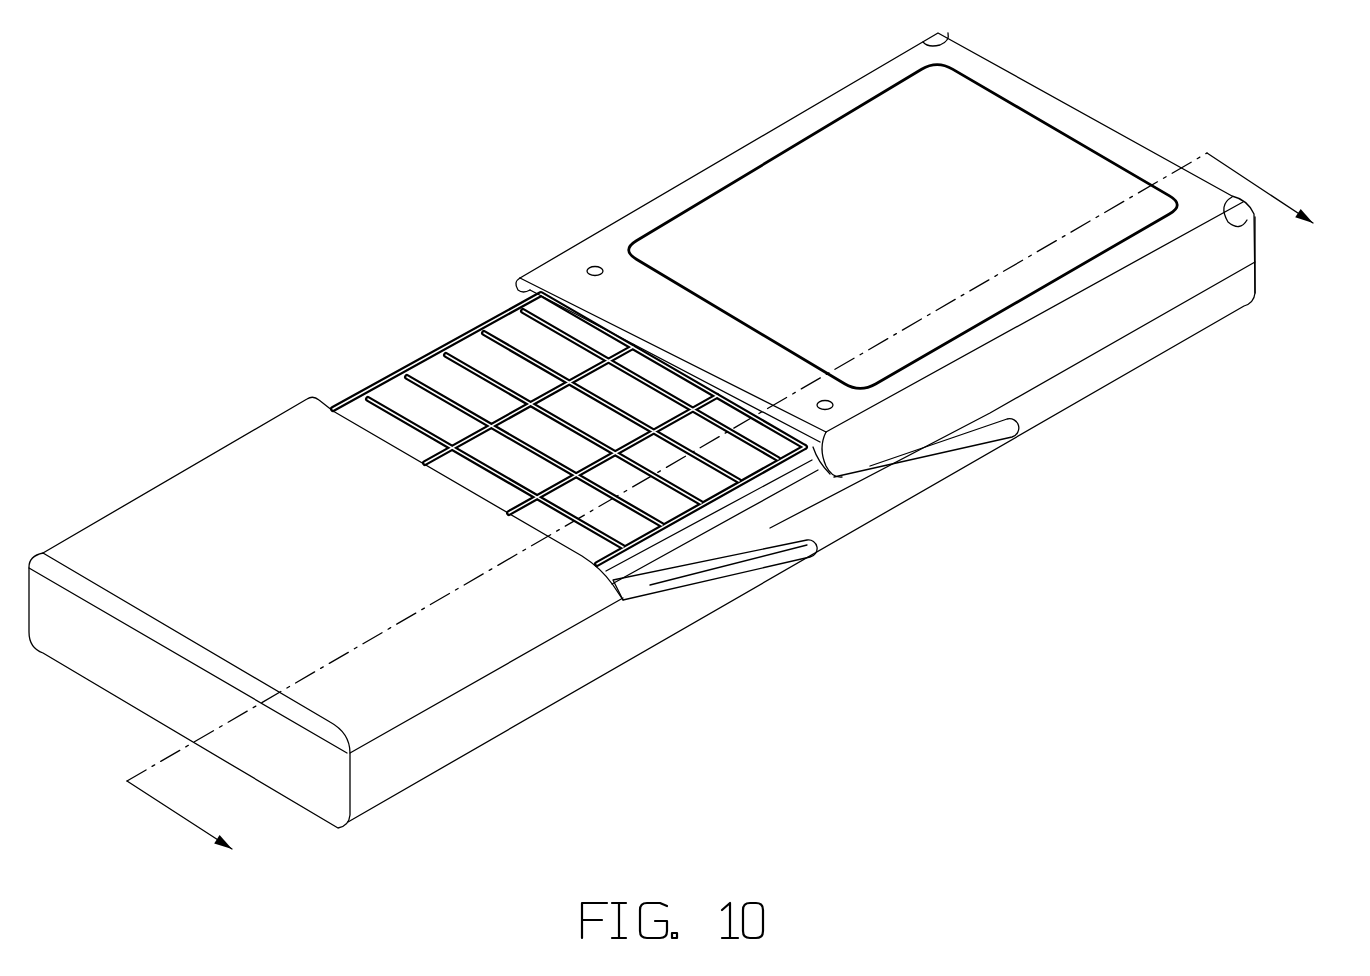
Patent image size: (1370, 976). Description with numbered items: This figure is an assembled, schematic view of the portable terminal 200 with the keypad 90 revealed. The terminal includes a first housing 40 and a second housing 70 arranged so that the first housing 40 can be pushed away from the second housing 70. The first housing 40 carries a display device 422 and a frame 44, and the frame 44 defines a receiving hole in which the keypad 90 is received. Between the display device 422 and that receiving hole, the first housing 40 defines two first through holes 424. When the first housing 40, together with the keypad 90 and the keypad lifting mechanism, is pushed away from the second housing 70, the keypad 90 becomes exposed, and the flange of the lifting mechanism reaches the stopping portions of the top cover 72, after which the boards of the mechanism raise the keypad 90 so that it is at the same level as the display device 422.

The portable terminal 200 is at (368, 160).
The first housing 40 is at (1128, 150).
The display device 422 is at (1003, 127).
The first through holes 424 is at (597, 266).
The frame 44 is at (793, 497).
The second housing 70 is at (553, 678).
The top cover 72 is at (235, 470).
The keypad 90 is at (438, 378).